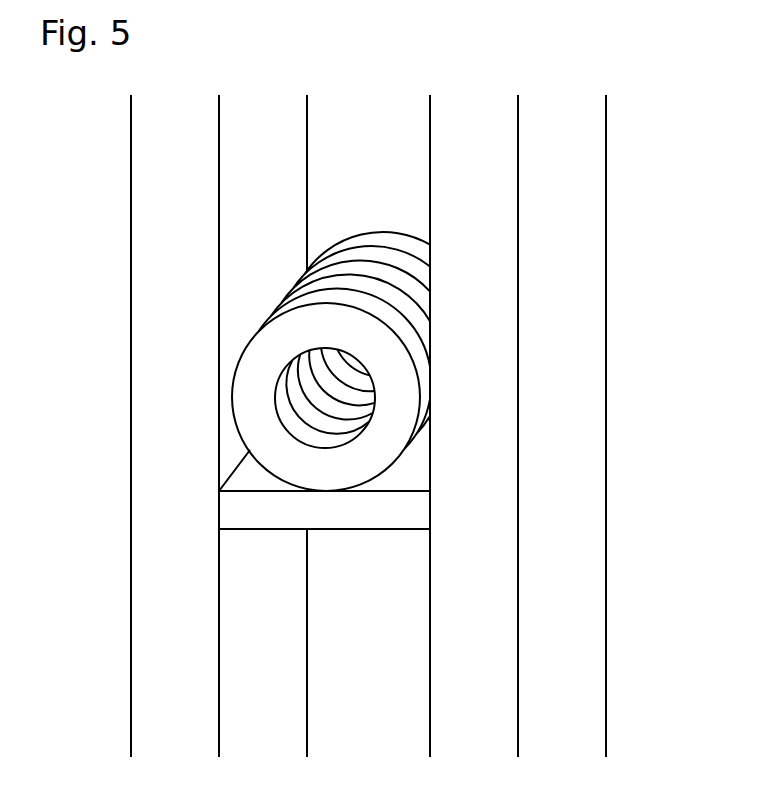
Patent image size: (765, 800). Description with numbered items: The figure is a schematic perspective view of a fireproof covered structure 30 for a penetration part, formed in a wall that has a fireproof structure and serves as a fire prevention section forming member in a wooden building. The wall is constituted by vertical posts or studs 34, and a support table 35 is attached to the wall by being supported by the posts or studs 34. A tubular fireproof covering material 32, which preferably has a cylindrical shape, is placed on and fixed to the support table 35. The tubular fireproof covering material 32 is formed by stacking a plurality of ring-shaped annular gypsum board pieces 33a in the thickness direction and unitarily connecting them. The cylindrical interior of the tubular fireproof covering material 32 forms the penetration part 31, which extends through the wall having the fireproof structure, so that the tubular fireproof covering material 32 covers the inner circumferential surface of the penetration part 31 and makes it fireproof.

The fireproof covered structure 30 is at (373, 402).
The penetration part 31 is at (302, 400).
The tubular fireproof covering material 32 is at (226, 269).
The annular gypsum board pieces 33a is at (381, 290).
The posts or studs 34 is at (150, 553).
The support table 35 is at (361, 516).